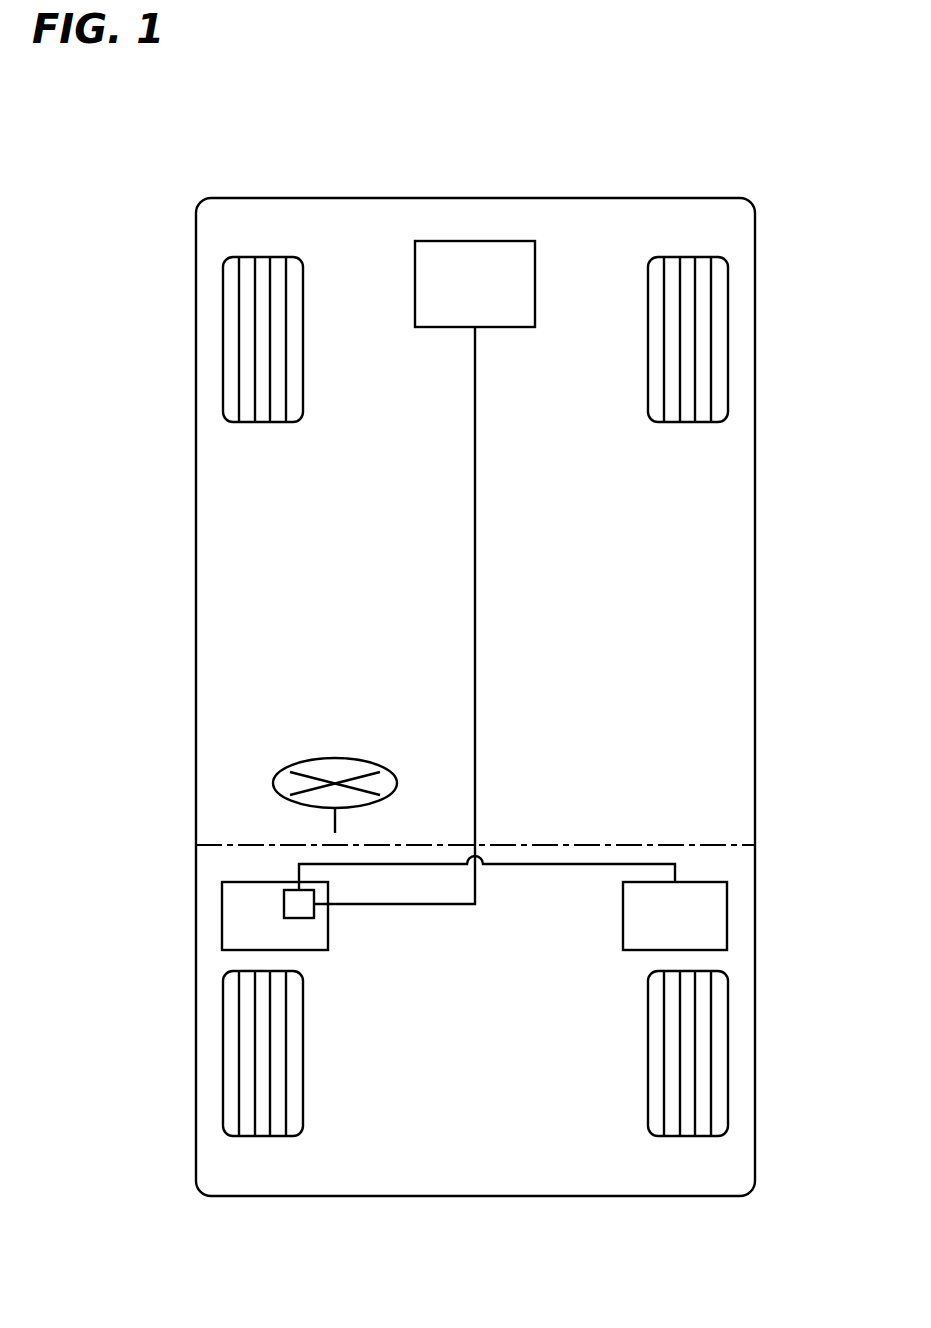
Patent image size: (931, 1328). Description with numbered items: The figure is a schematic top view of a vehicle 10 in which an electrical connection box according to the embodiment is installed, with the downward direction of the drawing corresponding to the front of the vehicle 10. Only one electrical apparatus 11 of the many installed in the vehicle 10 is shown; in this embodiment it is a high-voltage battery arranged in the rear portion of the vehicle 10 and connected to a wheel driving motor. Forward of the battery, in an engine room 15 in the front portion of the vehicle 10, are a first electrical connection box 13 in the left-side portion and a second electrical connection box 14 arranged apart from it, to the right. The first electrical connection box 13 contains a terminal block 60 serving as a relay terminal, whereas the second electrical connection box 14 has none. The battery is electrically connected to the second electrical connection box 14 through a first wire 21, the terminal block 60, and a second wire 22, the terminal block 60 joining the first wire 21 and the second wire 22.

The vehicle 10 is at (799, 158).
The electrical apparatus 11 is at (520, 327).
The first electrical connection box 13 is at (222, 905).
The second electrical connection box 14 is at (623, 931).
The engine room 15 is at (462, 1183).
The first wire 21 is at (476, 602).
The second wire 22 is at (515, 866).
The terminal block 60 is at (284, 905).